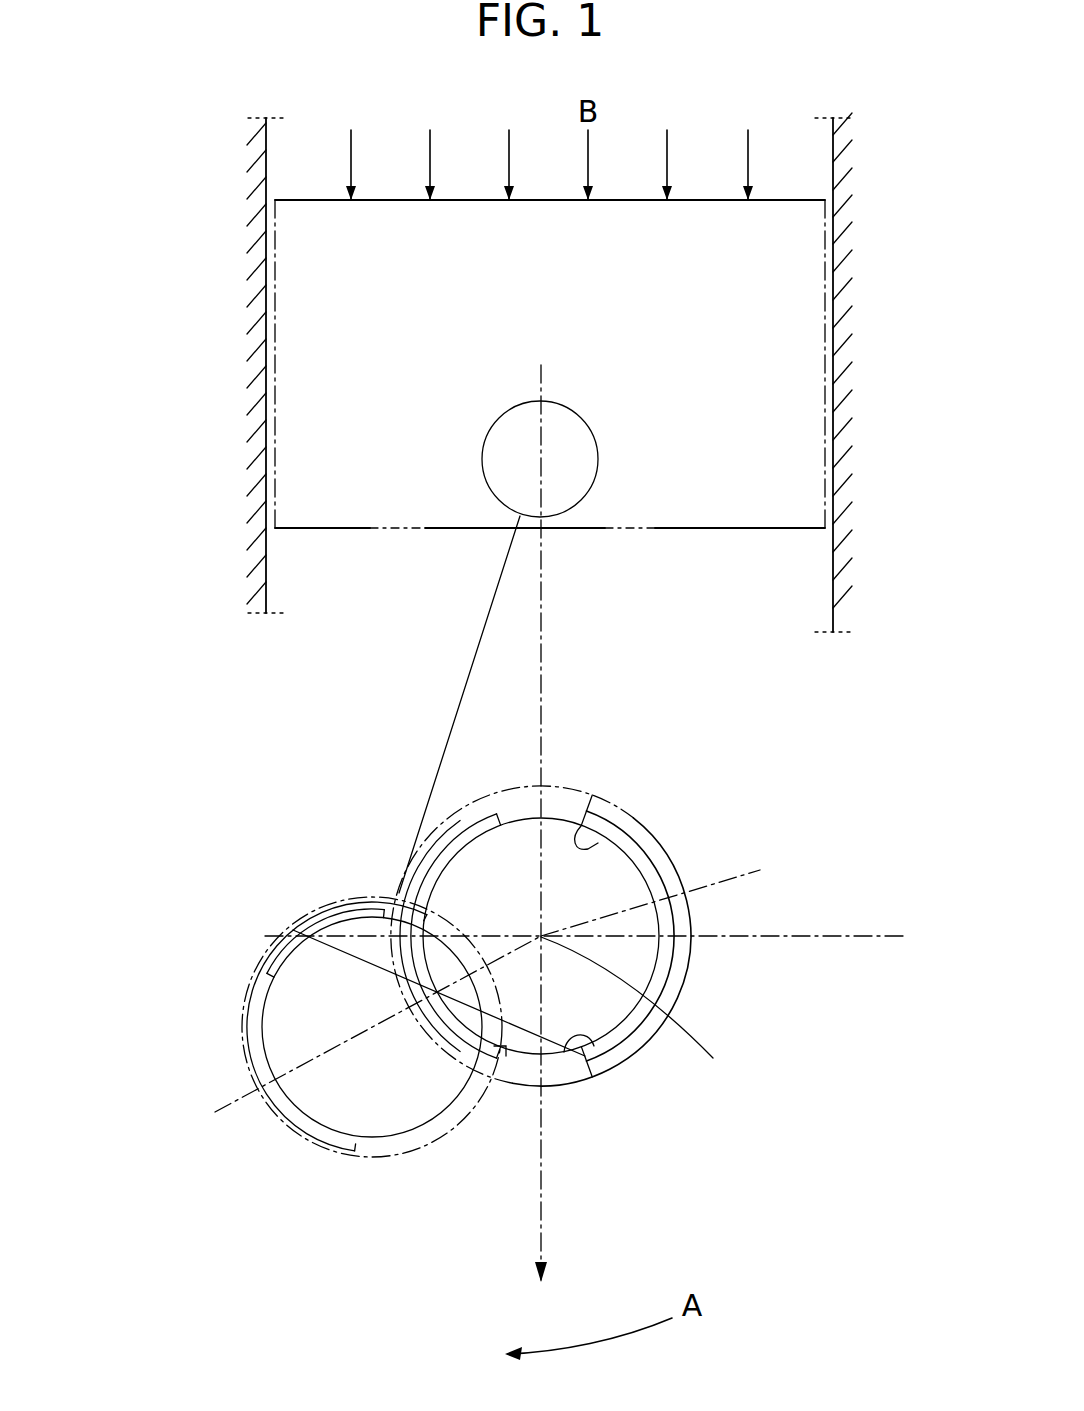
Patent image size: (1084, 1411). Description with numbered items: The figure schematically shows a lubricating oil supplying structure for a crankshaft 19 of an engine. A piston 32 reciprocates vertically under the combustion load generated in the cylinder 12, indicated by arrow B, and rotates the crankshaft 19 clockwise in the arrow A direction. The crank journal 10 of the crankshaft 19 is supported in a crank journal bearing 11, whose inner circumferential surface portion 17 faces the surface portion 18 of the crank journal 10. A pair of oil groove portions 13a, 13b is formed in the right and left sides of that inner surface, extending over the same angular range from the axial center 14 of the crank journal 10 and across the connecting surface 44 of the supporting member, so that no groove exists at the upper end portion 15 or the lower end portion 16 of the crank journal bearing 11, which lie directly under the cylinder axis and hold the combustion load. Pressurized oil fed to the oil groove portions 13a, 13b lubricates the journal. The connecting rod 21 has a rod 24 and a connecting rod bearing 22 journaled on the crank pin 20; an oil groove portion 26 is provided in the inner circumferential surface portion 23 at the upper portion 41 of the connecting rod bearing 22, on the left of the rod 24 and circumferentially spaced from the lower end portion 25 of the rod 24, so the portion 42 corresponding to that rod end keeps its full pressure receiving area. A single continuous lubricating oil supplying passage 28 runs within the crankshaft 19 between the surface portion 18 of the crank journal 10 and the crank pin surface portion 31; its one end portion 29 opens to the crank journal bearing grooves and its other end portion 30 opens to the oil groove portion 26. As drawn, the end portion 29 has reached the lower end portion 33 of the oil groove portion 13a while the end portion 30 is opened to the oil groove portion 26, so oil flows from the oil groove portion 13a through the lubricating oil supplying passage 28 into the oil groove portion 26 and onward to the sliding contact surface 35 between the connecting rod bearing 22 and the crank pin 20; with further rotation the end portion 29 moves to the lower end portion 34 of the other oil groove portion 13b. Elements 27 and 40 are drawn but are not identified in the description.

The crank journal 10 is at (613, 917).
The crank journal bearing 11 is at (698, 963).
The cylinder 12 is at (265, 275).
The oil groove portion 13a is at (682, 914).
The oil groove portion 13b is at (458, 835).
The axial center 14 is at (655, 978).
The upper end portion 15 is at (583, 752).
The lower end portion 16 is at (527, 1093).
The inner circumferential surface portion 17 is at (608, 838).
The surface portion 18 is at (575, 790).
The crankshaft 19 is at (286, 1253).
The crank pin 20 is at (297, 1045).
The connecting rod 21 is at (434, 669).
The connecting rod bearing 22 is at (355, 1150).
The inner circumferential surface portion 23 is at (268, 956).
The rod 24 is at (487, 618).
The lower end portion 25 is at (396, 886).
The oil groove portion 26 is at (296, 932).
The end projection 27 is at (402, 905).
The lubricating oil supplying passage 28 is at (568, 1012).
The end portion 29 is at (600, 1053).
The end portion 30 is at (312, 942).
The crank pin surface portion 31 is at (256, 1005).
The piston 32 is at (670, 450).
The lower end portion 33 is at (586, 1062).
The lower end portion 34 is at (486, 1012).
The sliding contact surface 35 is at (398, 1146).
The outer ring of second rotary member 40 is at (302, 1140).
The upper portion 41 is at (350, 894).
The portion 42 is at (378, 988).
The connecting surface 44 is at (829, 936).